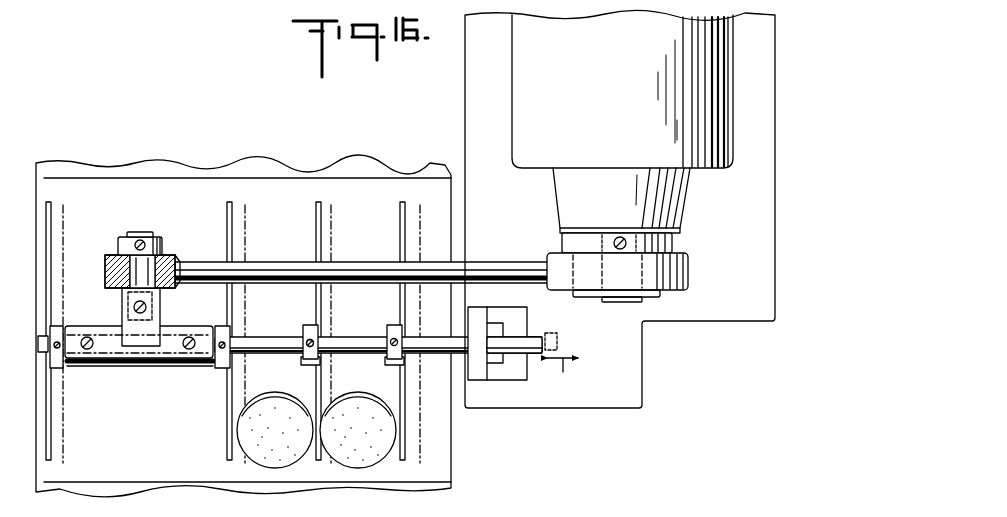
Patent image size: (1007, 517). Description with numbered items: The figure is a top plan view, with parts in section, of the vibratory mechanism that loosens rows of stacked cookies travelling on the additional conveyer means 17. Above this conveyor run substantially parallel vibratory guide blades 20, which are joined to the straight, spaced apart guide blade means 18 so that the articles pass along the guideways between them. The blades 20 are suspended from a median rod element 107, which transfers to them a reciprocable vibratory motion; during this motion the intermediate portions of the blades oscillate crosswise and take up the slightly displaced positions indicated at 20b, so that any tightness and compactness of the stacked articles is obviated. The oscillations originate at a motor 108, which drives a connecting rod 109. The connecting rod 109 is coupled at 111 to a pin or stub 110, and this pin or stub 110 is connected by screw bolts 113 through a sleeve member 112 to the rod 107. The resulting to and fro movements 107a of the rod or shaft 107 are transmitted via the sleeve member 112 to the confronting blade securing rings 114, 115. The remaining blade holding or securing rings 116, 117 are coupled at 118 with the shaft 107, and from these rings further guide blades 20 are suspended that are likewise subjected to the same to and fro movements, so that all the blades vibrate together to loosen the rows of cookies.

The additional conveyer means 17 is at (88, 185).
The guide blade means 18 is at (308, 464).
The guide blades 20 is at (400, 203).
The displaced blade positions 20b is at (67, 212).
The median rod element 107 is at (348, 338).
The to and fro movements 107a is at (567, 379).
The motor 108 is at (623, 88).
The connecting rod 109 is at (205, 268).
The pin or stub 110 is at (142, 233).
The coupling 111 is at (167, 248).
The sleeve member 112 is at (138, 357).
The screw bolts 113 is at (88, 337).
The blade securing ring 114 is at (78, 362).
The blade securing ring 115 is at (222, 365).
The blade holding ring 116 is at (302, 365).
The blade holding ring 117 is at (387, 363).
The coupling 118 is at (307, 343).